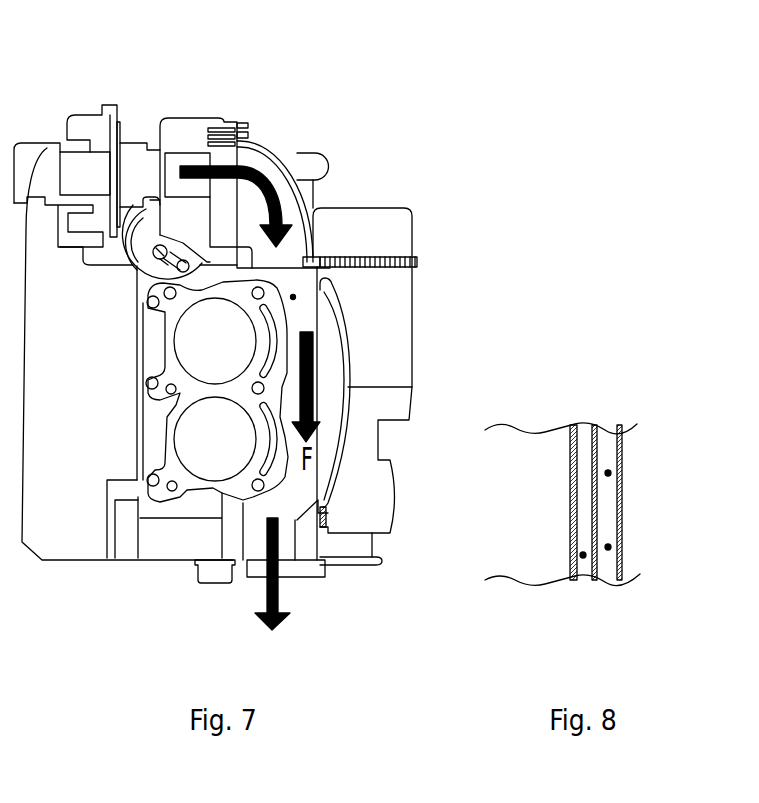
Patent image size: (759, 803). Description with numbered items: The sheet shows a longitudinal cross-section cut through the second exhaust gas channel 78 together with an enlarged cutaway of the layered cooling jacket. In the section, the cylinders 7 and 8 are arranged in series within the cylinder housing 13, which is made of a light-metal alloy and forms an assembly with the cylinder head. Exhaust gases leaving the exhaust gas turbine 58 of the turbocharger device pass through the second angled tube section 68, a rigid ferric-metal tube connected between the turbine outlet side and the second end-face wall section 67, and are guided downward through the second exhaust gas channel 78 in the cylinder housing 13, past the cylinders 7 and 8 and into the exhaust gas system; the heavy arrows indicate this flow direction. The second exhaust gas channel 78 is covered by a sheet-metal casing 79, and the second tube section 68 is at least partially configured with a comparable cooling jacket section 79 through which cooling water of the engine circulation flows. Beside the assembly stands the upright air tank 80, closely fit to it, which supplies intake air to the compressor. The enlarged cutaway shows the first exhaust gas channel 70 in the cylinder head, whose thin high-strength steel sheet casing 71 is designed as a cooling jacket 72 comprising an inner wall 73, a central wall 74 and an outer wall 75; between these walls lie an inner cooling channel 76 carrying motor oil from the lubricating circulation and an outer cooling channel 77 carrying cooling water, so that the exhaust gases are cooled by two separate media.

In FIG. 7, the cylinder 7 is at (283, 473).
In FIG. 7, the cylinder 8 is at (285, 325).
In FIG. 7, the cylinder housing 13 is at (167, 562).
In FIG. 7, the exhaust gas turbine 58 is at (223, 113).
In FIG. 7, the second end-face wall section 67 is at (278, 263).
In FIG. 7, the second angled tube section 68 is at (258, 138).
In FIG. 8, the first exhaust gas channel 70 is at (562, 504).
In FIG. 8, the casing 71 is at (633, 488).
In FIG. 8, the cooling jacket 72 is at (618, 553).
In FIG. 8, the inner wall 73 is at (565, 533).
In FIG. 8, the central wall 74 is at (600, 443).
In FIG. 8, the outer wall 75 is at (623, 513).
In FIG. 8, the inner cooling channel 76 is at (583, 558).
In FIG. 8, the outer cooling channel 77 is at (619, 463).
In FIG. 7, the second exhaust gas channel 78 is at (293, 297).
In FIG. 7, the casing / cooling jacket section 79 is at (303, 215).
In FIG. 7, the air tank 80 is at (80, 562).